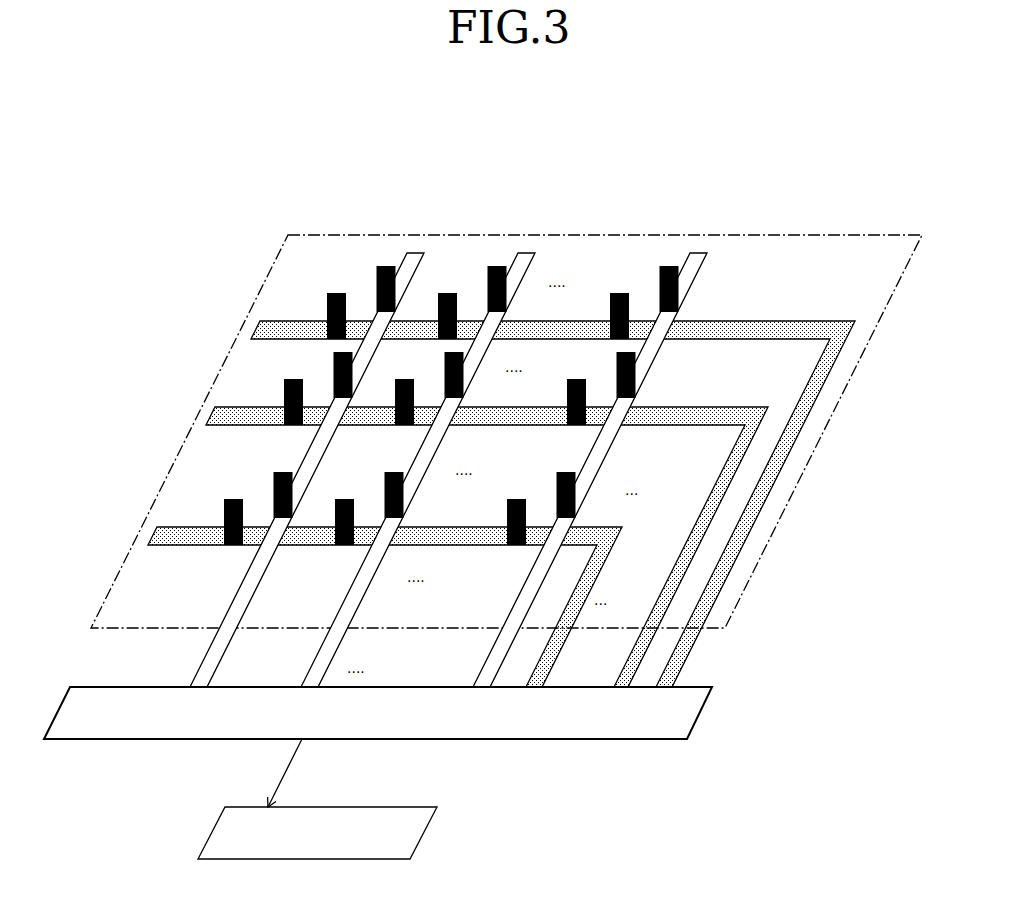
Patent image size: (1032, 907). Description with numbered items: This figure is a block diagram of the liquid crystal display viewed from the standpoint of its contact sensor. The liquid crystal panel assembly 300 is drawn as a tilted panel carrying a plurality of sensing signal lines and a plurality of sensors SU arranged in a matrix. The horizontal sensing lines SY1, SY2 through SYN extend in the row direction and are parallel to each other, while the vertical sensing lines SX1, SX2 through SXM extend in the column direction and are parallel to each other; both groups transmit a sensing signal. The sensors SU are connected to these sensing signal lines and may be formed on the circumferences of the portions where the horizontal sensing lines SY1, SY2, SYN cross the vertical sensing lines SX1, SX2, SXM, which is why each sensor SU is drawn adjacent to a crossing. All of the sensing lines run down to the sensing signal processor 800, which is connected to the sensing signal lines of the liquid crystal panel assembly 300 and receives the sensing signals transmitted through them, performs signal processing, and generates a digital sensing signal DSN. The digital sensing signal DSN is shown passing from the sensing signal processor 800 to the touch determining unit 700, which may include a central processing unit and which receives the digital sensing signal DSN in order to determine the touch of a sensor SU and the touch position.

The liquid crystal panel assembly 300 is at (821, 437).
The sensing signal processor 800 is at (385, 725).
The touch determining unit 700 is at (337, 847).
The sensor SU is at (334, 292).
The vertical sensing line SX1 is at (285, 470).
The vertical sensing line SX2 is at (394, 470).
The vertical sensing line SXM is at (565, 470).
The horizontal sensing line SY1 is at (661, 688).
The horizontal sensing line SY2 is at (618, 688).
The horizontal sensing line SYN is at (532, 688).
The digital sensing signal DSN is at (303, 773).